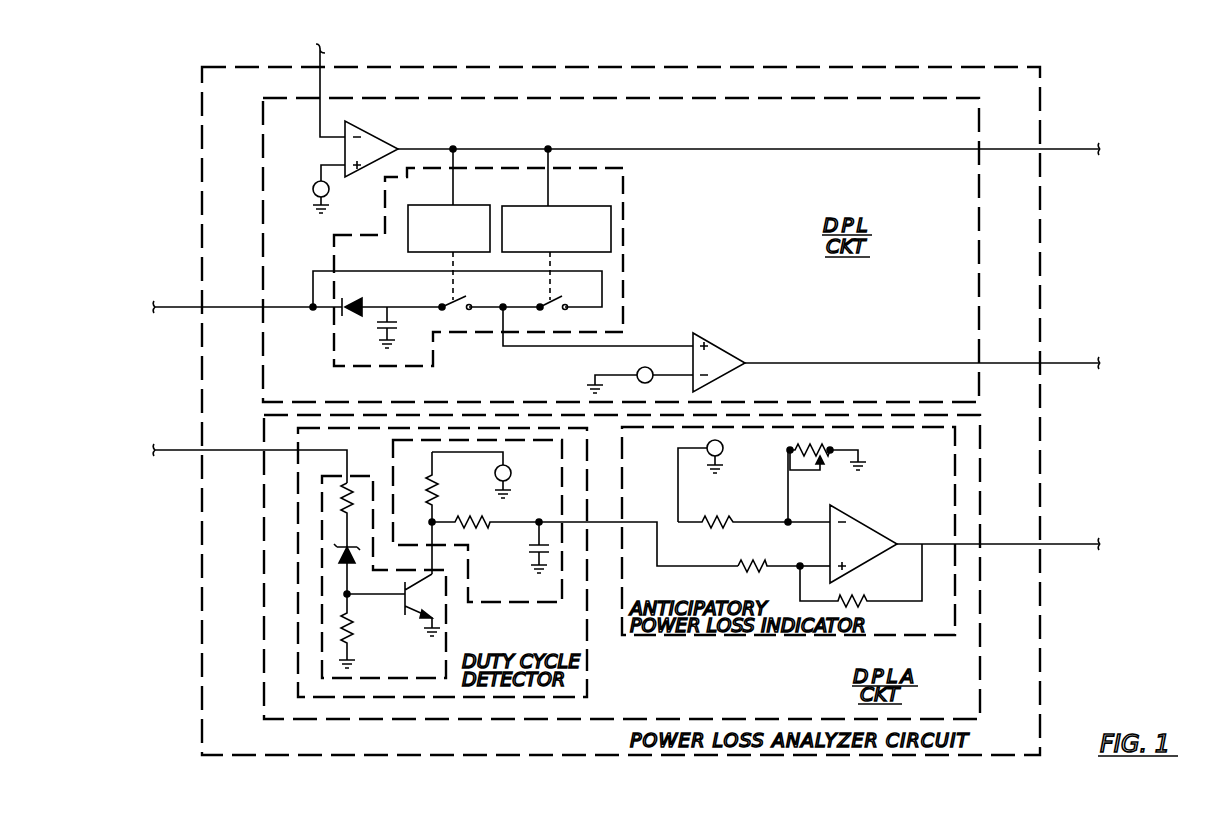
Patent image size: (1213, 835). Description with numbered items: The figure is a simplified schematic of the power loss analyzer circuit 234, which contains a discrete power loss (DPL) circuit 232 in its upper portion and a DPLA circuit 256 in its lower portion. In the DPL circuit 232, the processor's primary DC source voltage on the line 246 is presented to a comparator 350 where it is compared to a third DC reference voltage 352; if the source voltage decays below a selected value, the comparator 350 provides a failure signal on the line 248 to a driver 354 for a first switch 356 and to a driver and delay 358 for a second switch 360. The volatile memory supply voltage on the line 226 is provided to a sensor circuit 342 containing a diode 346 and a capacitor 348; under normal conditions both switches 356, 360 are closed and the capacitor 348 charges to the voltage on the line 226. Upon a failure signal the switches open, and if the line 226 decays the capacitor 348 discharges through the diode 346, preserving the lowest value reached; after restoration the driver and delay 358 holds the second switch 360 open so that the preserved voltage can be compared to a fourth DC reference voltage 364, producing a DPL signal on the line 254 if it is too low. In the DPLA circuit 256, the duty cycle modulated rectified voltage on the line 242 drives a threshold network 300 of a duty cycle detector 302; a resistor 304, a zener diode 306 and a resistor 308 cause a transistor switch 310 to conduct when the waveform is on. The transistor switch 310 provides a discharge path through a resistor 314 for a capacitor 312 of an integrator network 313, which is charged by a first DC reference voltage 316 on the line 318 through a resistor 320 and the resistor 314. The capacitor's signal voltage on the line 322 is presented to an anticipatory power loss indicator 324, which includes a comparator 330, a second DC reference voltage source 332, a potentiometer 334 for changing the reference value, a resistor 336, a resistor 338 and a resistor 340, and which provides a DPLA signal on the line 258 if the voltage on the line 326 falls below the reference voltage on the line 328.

The line 226 is at (182, 305).
The discrete power loss (DPL) circuit 232 is at (980, 252).
The power loss analyzer circuit 234 is at (1042, 668).
The line 242 is at (190, 449).
The line 246 is at (326, 52).
The line 248 is at (1055, 149).
The line 254 is at (1055, 363).
The DPLA circuit 256 is at (982, 640).
The line 258 is at (1055, 543).
The threshold network 300 is at (447, 630).
The duty cycle detector 302 is at (588, 686).
The resistor 304 is at (340, 502).
The zener diode 306 is at (340, 556).
The resistor 308 is at (356, 634).
The transistor switch 310 is at (403, 600).
The capacitor 312 is at (522, 553).
The integrator network 313 is at (522, 612).
The resistor 314 is at (485, 513).
The first DC reference voltage (REF 1) 316 is at (493, 474).
The line 318 is at (431, 474).
The resistor 320 is at (429, 490).
The line 322 is at (618, 522).
The anticipatory power loss indicator 324 is at (766, 636).
The line 326 is at (792, 566).
The line 328 is at (745, 506).
The comparator 330 is at (868, 516).
The second DC reference voltage source (REF 2) 332 is at (704, 466).
The potentiometer 334 is at (822, 447).
The resistor 336 is at (733, 345).
The resistor 338 is at (757, 560).
The resistor 340 is at (860, 598).
The sensor circuit 342 is at (332, 348).
The diode 346 is at (373, 292).
The capacitor 348 is at (384, 341).
The comparator 350 is at (383, 137).
The third DC reference voltage (REF 3) 352 is at (314, 190).
The driver 354 is at (451, 204).
The switch (S1) 356 is at (442, 304).
The driver and delay 358 is at (556, 202).
The switch (S2) 360 is at (540, 304).
The fourth DC reference voltage (REF 4) 364 is at (645, 385).